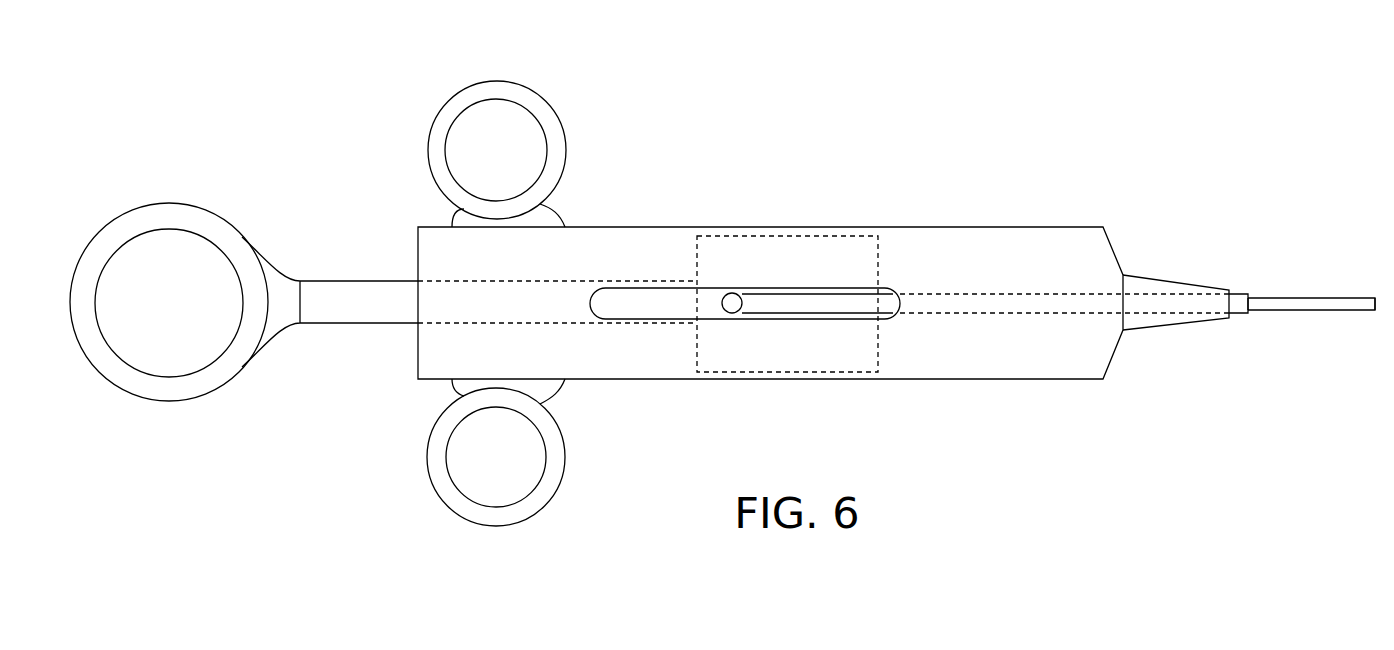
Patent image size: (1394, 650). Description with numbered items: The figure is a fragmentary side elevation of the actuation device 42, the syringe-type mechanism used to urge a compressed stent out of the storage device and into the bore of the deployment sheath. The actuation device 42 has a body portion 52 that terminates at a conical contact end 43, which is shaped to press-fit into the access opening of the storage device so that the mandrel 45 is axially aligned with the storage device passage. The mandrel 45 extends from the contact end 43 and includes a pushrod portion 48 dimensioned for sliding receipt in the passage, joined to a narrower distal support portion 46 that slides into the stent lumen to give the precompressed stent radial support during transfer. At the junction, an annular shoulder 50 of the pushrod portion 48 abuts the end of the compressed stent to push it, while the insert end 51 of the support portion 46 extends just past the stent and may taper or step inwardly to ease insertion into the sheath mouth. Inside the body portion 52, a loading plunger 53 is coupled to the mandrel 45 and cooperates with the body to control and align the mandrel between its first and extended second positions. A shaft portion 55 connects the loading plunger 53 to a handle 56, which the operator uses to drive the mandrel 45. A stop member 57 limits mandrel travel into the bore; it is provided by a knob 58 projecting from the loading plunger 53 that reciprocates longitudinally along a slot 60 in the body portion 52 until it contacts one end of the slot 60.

The actuation device 42 is at (912, 132).
The contact end 43 is at (1178, 325).
The mandrel 45 is at (1313, 313).
The support portion 46 is at (1330, 297).
The pushrod portion 48 is at (1240, 293).
The annular shoulder 50 is at (1248, 297).
The insert end 51 is at (1377, 311).
The body portion 52 is at (1015, 380).
The loading plunger 53 is at (803, 236).
The shaft portion 55 is at (365, 324).
The handle 56 is at (160, 401).
The stop member 57 is at (733, 280).
The knob 58 is at (722, 312).
The slot 60 is at (666, 316).